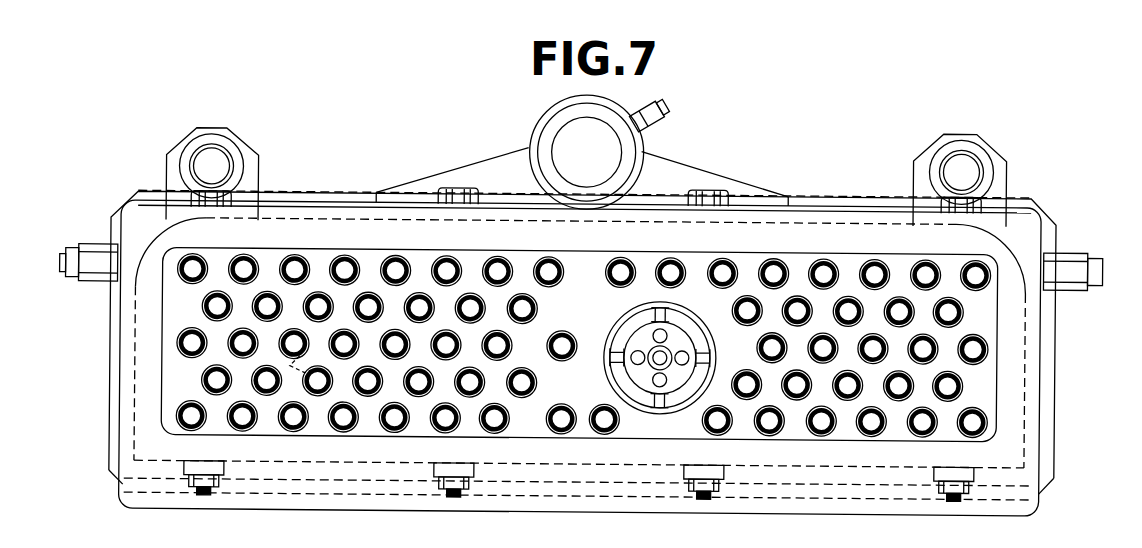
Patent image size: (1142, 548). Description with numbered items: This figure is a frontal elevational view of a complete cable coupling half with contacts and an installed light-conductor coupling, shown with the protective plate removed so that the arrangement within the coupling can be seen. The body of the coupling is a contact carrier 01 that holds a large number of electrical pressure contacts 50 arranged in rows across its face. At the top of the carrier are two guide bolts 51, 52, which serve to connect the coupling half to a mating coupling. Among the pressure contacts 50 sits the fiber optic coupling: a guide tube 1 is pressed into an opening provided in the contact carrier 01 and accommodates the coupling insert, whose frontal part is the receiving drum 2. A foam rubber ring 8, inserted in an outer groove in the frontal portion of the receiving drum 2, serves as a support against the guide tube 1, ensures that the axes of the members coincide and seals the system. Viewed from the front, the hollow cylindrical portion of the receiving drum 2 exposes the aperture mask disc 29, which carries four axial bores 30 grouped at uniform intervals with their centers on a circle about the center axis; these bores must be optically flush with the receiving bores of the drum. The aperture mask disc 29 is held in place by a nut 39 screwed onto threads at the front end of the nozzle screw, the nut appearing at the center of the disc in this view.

The contact carrier 01 is at (978, 394).
The guide tube 1 is at (647, 408).
The receiving drum 2 is at (638, 328).
The foam rubber ring 8 is at (692, 358).
The aperture mask disc 29 is at (683, 343).
The axial bores 30 is at (657, 380).
The nut 39 is at (648, 352).
The electrical pressure contacts 50 is at (190, 281).
The guide bolt 51 is at (220, 165).
The guide bolt 52 is at (948, 162).